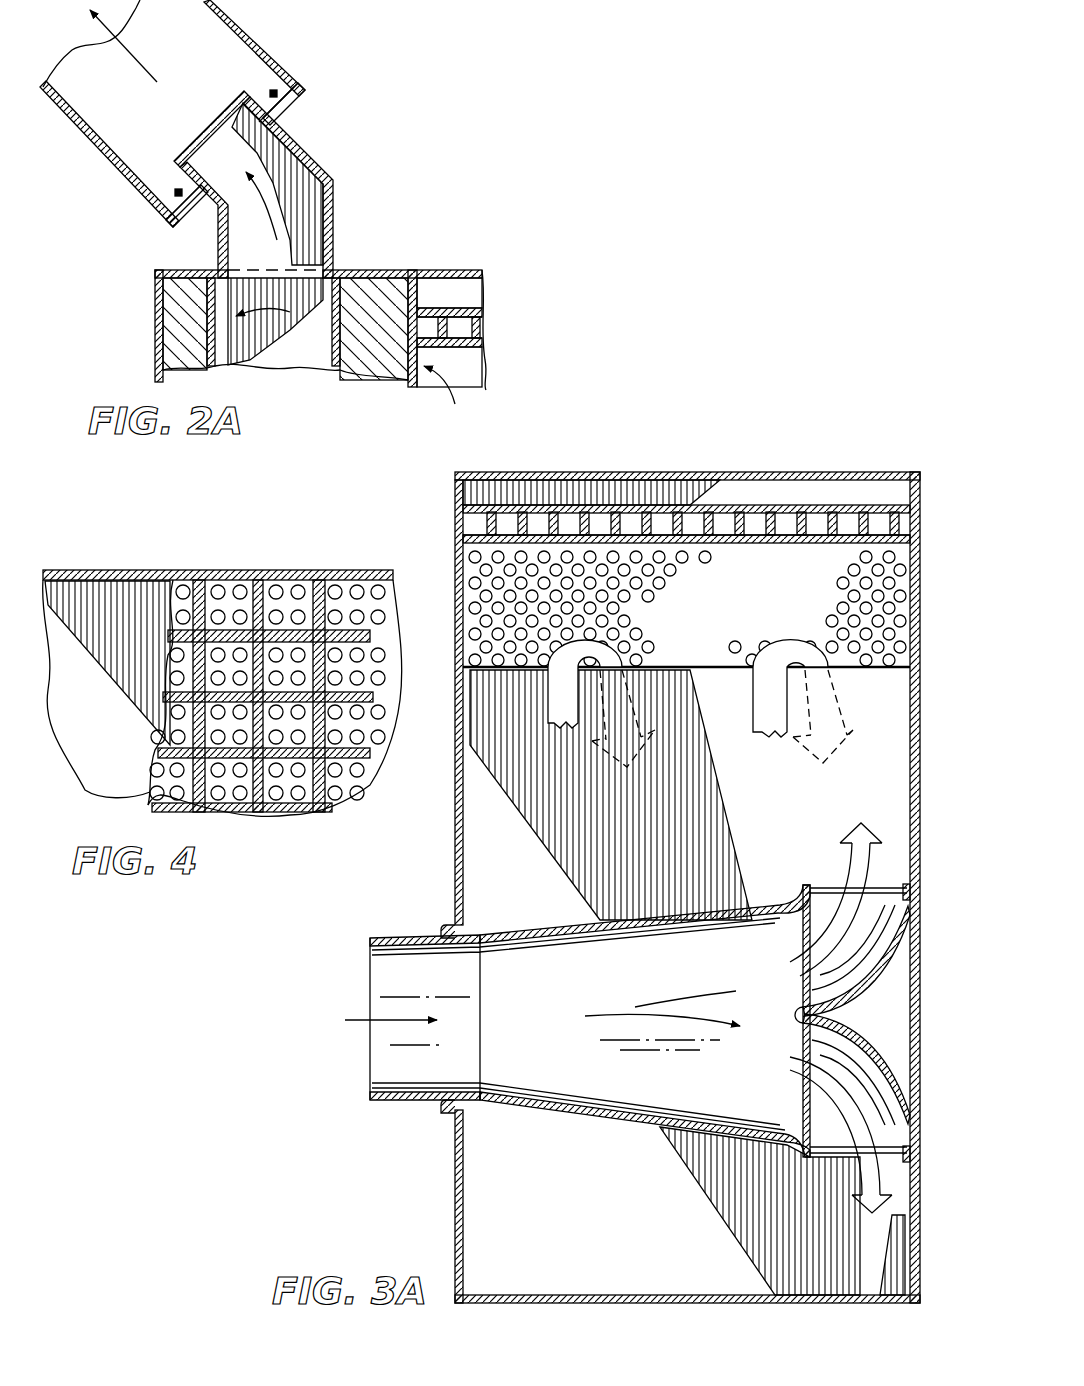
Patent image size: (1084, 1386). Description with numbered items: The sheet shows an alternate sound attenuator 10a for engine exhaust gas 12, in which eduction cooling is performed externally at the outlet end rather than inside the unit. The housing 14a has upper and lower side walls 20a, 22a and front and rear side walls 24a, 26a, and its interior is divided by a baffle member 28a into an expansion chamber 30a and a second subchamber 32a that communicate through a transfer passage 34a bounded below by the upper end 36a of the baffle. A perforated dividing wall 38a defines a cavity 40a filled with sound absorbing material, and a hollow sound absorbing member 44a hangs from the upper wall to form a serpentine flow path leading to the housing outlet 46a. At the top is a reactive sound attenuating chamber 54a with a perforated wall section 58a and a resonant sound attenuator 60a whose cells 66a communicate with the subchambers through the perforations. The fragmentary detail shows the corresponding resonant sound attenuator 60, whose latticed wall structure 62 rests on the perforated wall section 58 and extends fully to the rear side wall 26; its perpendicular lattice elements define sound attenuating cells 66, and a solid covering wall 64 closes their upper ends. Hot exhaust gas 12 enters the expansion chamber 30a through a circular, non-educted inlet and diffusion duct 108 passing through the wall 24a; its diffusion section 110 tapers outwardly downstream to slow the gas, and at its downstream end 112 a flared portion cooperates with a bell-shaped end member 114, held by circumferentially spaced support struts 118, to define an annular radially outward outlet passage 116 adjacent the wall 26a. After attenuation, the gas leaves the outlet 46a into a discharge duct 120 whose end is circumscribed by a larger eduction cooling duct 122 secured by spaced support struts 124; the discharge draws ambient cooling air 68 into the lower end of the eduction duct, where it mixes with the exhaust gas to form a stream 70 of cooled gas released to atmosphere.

In FIG. 2A, the sound attenuator 10a is at (396, 205).
In FIG. 3A, the sound attenuator 10a is at (695, 448).
In FIG. 2A, the exhaust gas 12 is at (200, 62).
In FIG. 3A, the exhaust gas 12 is at (574, 696).
In FIG. 2A, the housing 14a is at (150, 322).
In FIG. 3A, the housing 14a is at (681, 870).
In FIG. 3A, the upper side wall 20a is at (793, 470).
In FIG. 3A, the lower side wall 22a is at (636, 1294).
In FIG. 2A, the front side wall 24a is at (152, 345).
In FIG. 3A, the front side wall 24a is at (450, 895).
In FIG. 3A, the rear side wall 26a is at (912, 660).
In FIG. 3A, the baffle member 28a is at (682, 810).
In FIG. 3A, the expansion chamber 30a is at (455, 1168).
In FIG. 2A, the second subchamber 32a is at (472, 352).
In FIG. 3A, the transfer passage 34a is at (470, 656).
In FIG. 3A, the upper end of baffle 36a is at (690, 664).
In FIG. 2A, the perforated dividing wall 38a is at (275, 321).
In FIG. 2A, the cavity 40a is at (178, 308).
In FIG. 2A, the hollow sound absorbing member 44a is at (448, 391).
In FIG. 3A, the hollow sound absorbing member 44a is at (474, 548).
In FIG. 2A, the housing outlet 46a is at (277, 262).
In FIG. 2A, the reactive sound attenuating chamber 54a is at (470, 296).
In FIG. 3A, the reactive sound attenuating chamber 54a is at (860, 492).
In FIG. 2A, the perforated wall section 58a is at (452, 352).
In FIG. 3A, the perforated wall section 58a is at (738, 552).
In FIG. 2A, the resonant sound attenuator 60a is at (440, 300).
In FIG. 3A, the resonant sound attenuator 60a is at (500, 500).
In FIG. 4, the rear side wall 26 is at (90, 572).
In FIG. 4, the perforated wall section 58 is at (335, 795).
In FIG. 4, the resonant sound attenuator 60 is at (126, 768).
In FIG. 4, the latticed wall structure 62 is at (342, 595).
In FIG. 4, the covering wall 64 is at (145, 580).
In FIG. 4, the sound attenuating cells 66 is at (288, 596).
In FIG. 3A, the sound attenuating cells 66a is at (578, 522).
In FIG. 2A, the ambient cooling air 68 is at (288, 92).
In FIG. 2A, the stream of cooled exhaust gas 70 is at (145, 72).
In FIG. 3A, the inlet and diffusion duct 108 is at (428, 1110).
In FIG. 3A, the diffusion section 110 is at (646, 920).
In FIG. 3A, the downstream end 112 is at (800, 895).
In FIG. 3A, the bell-shaped end member 114 is at (880, 972).
In FIG. 3A, the outlet passage 116 is at (888, 896).
In FIG. 3A, the support struts 118 is at (834, 888).
In FIG. 2A, the discharge duct 120 is at (316, 172).
In FIG. 2A, the eduction cooling duct 122 is at (241, 30).
In FIG. 2A, the support struts 124 is at (162, 196).